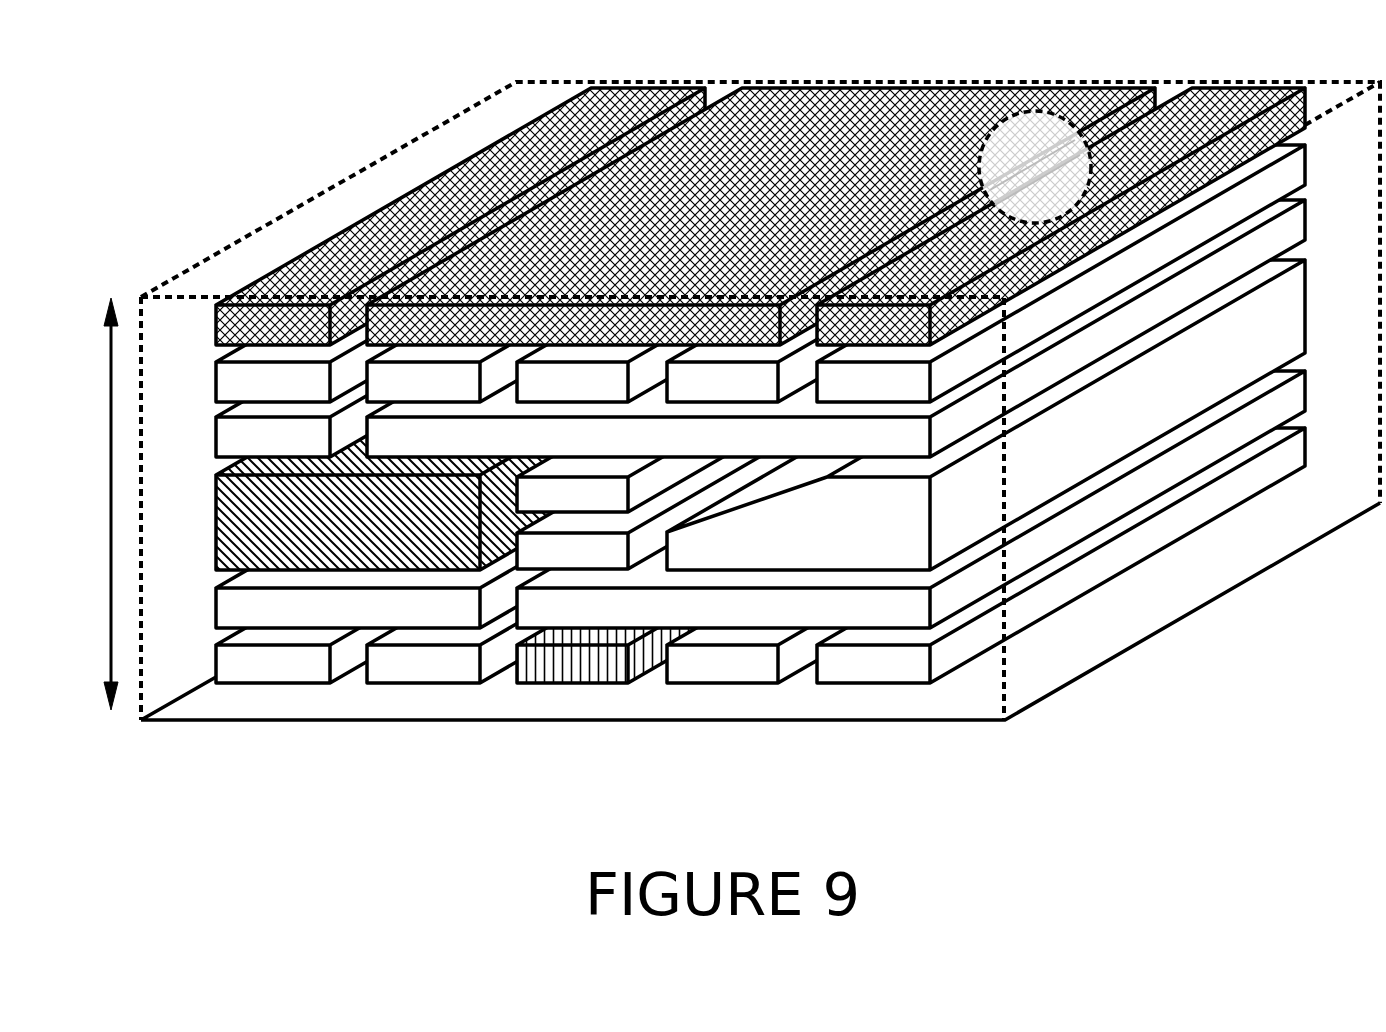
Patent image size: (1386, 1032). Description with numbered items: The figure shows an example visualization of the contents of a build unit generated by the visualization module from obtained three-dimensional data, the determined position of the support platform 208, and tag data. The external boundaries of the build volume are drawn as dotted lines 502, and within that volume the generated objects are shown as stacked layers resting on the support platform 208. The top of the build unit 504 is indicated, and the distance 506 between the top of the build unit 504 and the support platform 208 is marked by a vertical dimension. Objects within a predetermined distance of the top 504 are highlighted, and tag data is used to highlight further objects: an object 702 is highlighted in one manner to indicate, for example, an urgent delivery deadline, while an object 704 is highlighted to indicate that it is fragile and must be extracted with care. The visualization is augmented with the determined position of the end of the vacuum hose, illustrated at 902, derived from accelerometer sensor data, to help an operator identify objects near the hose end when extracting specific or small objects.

The support platform 208 is at (1160, 578).
The dotted lines 502 is at (422, 135).
The top of the build unit 504 is at (205, 277).
The distance between the top of the build unit and the support platform 506 is at (108, 513).
The object 702 is at (535, 414).
The object 704 is at (760, 555).
The determined position of the end of the vacuum hose 902 is at (1053, 147).